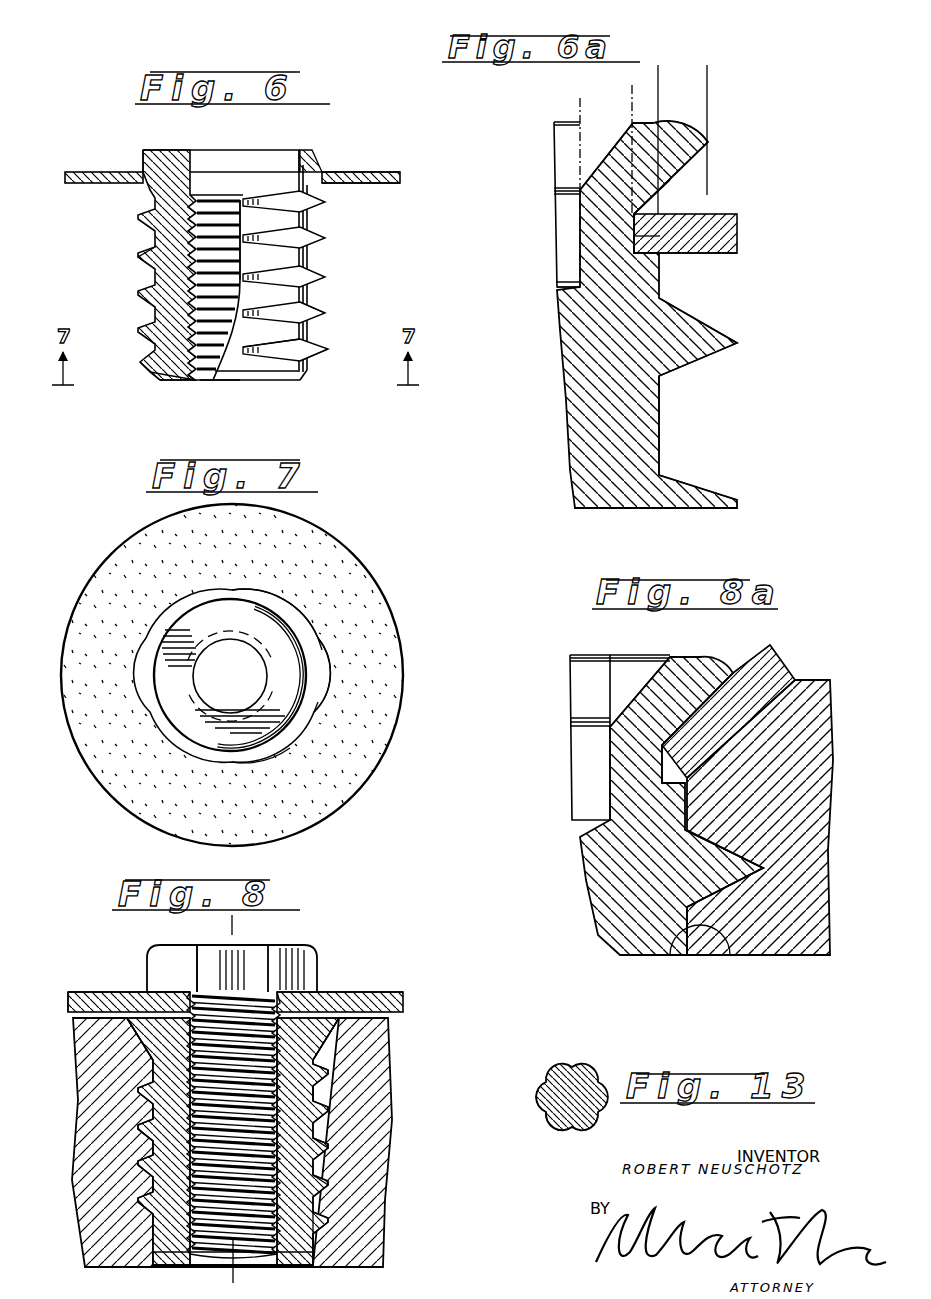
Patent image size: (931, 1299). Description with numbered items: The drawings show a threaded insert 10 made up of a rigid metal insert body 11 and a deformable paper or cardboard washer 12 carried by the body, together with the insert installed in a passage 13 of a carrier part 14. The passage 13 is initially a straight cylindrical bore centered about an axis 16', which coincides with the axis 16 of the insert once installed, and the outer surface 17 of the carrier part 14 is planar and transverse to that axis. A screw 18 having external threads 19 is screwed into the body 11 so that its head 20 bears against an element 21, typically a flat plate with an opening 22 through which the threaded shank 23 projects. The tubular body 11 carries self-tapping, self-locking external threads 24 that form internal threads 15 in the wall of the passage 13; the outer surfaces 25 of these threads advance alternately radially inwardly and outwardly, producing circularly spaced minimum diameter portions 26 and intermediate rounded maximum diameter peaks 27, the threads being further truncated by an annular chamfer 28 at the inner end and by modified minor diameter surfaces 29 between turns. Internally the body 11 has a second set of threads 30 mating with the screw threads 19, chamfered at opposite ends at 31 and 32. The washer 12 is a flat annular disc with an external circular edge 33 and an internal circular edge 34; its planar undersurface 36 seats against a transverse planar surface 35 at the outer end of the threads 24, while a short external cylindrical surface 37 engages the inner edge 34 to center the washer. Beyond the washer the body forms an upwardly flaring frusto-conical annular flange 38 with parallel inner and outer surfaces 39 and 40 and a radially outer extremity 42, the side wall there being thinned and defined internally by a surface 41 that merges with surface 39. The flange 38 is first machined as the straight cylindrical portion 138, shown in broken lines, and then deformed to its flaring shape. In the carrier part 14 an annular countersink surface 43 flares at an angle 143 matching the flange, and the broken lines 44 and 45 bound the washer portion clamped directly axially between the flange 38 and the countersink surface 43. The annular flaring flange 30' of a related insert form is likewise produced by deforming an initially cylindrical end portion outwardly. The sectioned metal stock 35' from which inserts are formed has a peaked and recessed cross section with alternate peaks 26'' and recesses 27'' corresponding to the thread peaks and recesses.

In FIG. 6, the threaded insert 10 is at (340, 272).
In FIG. 6A, the threaded insert 10 is at (700, 414).
In FIG. 7, the threaded insert 10 is at (286, 590).
In FIG. 8, the threaded insert 10 is at (142, 1186).
In FIG. 8A, the threaded insert 10 is at (666, 805).
In FIG. 6, the insert body 11 is at (160, 372).
In FIG. 6A, the insert body 11 is at (712, 494).
In FIG. 8, the insert body 11 is at (330, 1163).
In FIG. 8A, the insert body 11 is at (643, 950).
In FIG. 6, the washer 12 is at (376, 180).
In FIG. 6A, the washer 12 is at (744, 236).
In FIG. 7, the washer 12 is at (120, 543).
In FIG. 8, the washer 12 is at (332, 1030).
In FIG. 8A, the washer 12 is at (792, 662).
In FIG. 8, the passage 13 is at (315, 1258).
In FIG. 8A, the passage 13 is at (680, 945).
In FIG. 8, the carrier part 14 is at (392, 1216).
In FIG. 8A, the carrier part 14 is at (832, 760).
In FIG. 8, the internal threads 15 is at (342, 1116).
In FIG. 6, the axis 16 is at (260, 314).
In FIG. 7, the axis 16 is at (223, 681).
In FIG. 8, the axis 16' is at (259, 1266).
In FIG. 8, the outer surface 17 is at (84, 994).
In FIG. 8, the screw 18 is at (160, 944).
In FIG. 8, the external threads 19 is at (162, 990).
In FIG. 8, the head 20 is at (198, 950).
In FIG. 8, the element 21 is at (404, 995).
In FIG. 8, the opening 22 is at (282, 993).
In FIG. 8, the threaded shank 23 is at (325, 1060).
In FIG. 6, the external threads 24 is at (327, 318).
In FIG. 6A, the external threads 24 is at (740, 344).
In FIG. 7, the external threads 24 is at (308, 610).
In FIG. 8, the external threads 24 is at (342, 1148).
In FIG. 8A, the external threads 24 is at (766, 871).
In FIG. 6, the outer surfaces 25 is at (327, 303).
In FIG. 7, the outer surfaces 25 is at (328, 673).
In FIG. 6, the minimum diameter portions 26 is at (330, 373).
In FIG. 7, the minimum diameter portions 26 is at (360, 674).
In FIG. 6, the peaks 27 is at (289, 382).
In FIG. 7, the peaks 27 is at (336, 758).
In FIG. 6, the chamfering 28 is at (162, 380).
In FIG. 6, the minor diameter surfaces 29 is at (150, 284).
In FIG. 6A, the minor diameter surfaces 29 is at (662, 434).
In FIG. 8, the minor diameter surfaces 29 is at (152, 1148).
In FIG. 8A, the minor diameter surfaces 29 is at (735, 935).
In FIG. 6, the internal threads 30 is at (223, 413).
In FIG. 8, the flange 30' is at (233, 1276).
In FIG. 6, the chamfer 31 is at (205, 146).
In FIG. 6, the chamfer 32 is at (192, 382).
In FIG. 6, the external circular edge 33 is at (400, 178).
In FIG. 6, the internal circular edge 34 is at (301, 160).
In FIG. 6A, the internal circular edge 34 is at (636, 230).
In FIG. 8A, the internal circular edge 34 is at (662, 767).
In FIG. 6, the transverse planar surface 35 is at (146, 149).
In FIG. 6A, the transverse planar surface 35 is at (669, 271).
In FIG. 13, the metal stock 35' is at (542, 1093).
In FIG. 6, the undersurface 36 is at (392, 184).
In FIG. 6A, the undersurface 36 is at (722, 254).
In FIG. 6A, the external cylindrical surface 37 is at (648, 240).
In FIG. 6, the annular flange 38 is at (320, 165).
In FIG. 6A, the annular flange 38 is at (716, 134).
In FIG. 8, the annular flange 38 is at (142, 1062).
In FIG. 6A, the radially inner surface 39 is at (634, 122).
In FIG. 8A, the radially inner surface 39 is at (655, 662).
In FIG. 6A, the radially outer surface 40 is at (694, 160).
In FIG. 8A, the radially outer surface 40 is at (733, 673).
In FIG. 6A, the surface 41 is at (574, 280).
In FIG. 6A, the radially outer extremity 42 is at (696, 128).
In FIG. 8, the countersink surface 43 is at (132, 1038).
In FIG. 6A, the broken line 44 is at (658, 78).
In FIG. 6A, the broken line 45 is at (708, 78).
In FIG. 6A, the axially projecting portion 138 is at (603, 82).
In FIG. 8, the angle 143 is at (232, 920).
In FIG. 13, the peaks 26'' is at (507, 1101).
In FIG. 13, the recesses 27'' is at (523, 1131).